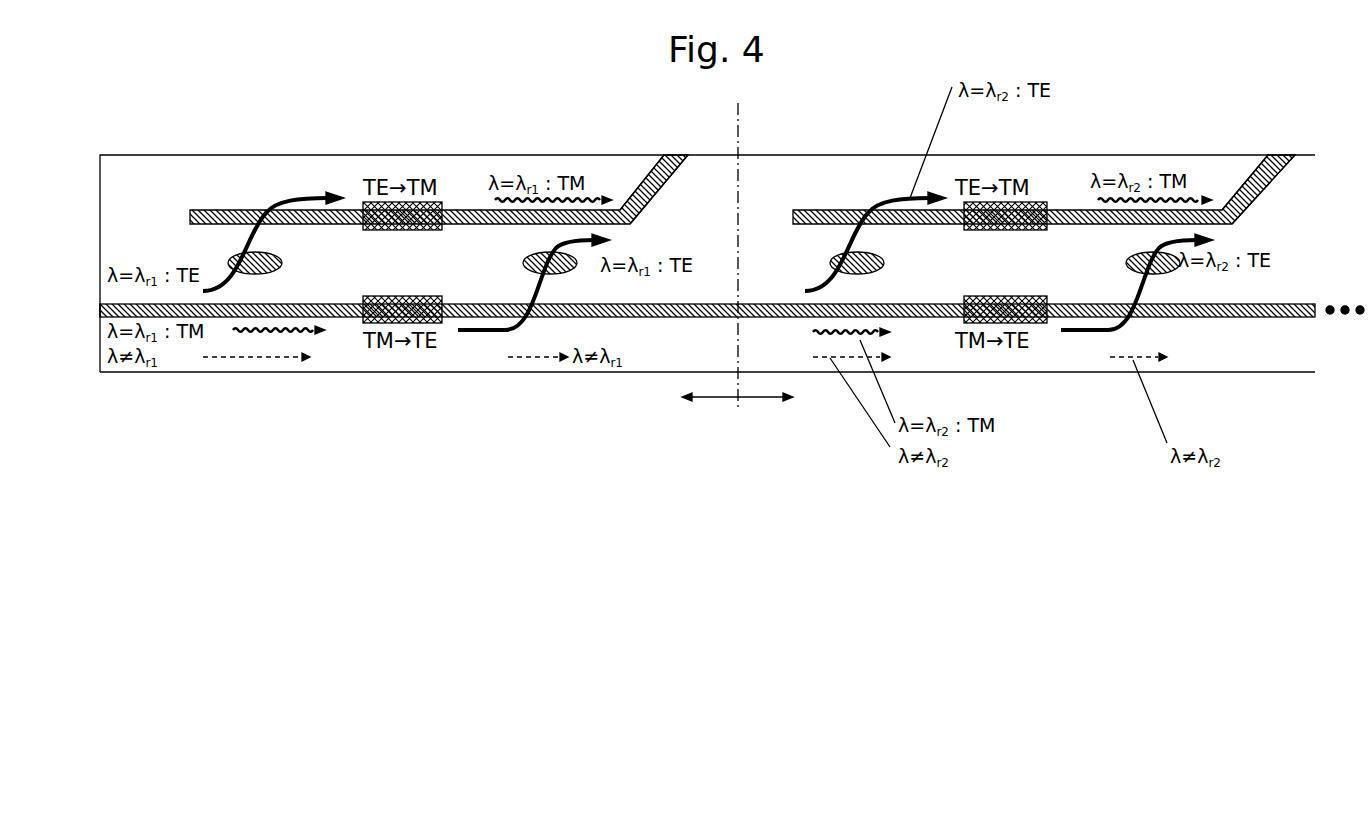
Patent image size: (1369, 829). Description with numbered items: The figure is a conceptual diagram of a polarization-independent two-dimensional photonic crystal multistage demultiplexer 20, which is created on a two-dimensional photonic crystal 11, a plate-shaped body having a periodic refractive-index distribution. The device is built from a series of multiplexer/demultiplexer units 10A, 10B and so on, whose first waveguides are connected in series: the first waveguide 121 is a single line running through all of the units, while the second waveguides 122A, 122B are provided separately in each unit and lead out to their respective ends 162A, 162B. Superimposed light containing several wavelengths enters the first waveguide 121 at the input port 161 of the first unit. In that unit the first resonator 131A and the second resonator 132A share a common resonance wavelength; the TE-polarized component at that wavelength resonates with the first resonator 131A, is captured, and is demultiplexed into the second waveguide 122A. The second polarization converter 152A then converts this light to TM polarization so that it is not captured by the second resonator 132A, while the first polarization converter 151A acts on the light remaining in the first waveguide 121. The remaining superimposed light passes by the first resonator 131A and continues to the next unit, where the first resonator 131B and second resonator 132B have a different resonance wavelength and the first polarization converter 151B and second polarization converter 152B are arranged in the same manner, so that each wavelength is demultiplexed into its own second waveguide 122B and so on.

The two-dimensional photonic crystal 11 is at (122, 168).
The multistage demultiplexer 20 is at (138, 411).
The first waveguide 121 is at (1282, 313).
The input port 161 is at (97, 308).
The second waveguide 122A is at (293, 210).
The second waveguide 122B is at (895, 210).
The output end of second waveguide A 162A is at (682, 155).
The output end of second waveguide B 162B is at (1278, 158).
The first polarization converter 151A is at (365, 323).
The first polarization converter 151B is at (1047, 323).
The second polarization converter 152A is at (363, 203).
The second polarization converter 152B is at (1045, 205).
The first resonator 131A is at (237, 257).
The second resonator 132A is at (532, 275).
The first resonator 131B is at (843, 257).
The second resonator 132B is at (1167, 273).
The multiplexer/demultiplexer unit 10A is at (710, 414).
The multiplexer/demultiplexer unit 10B is at (765, 269).